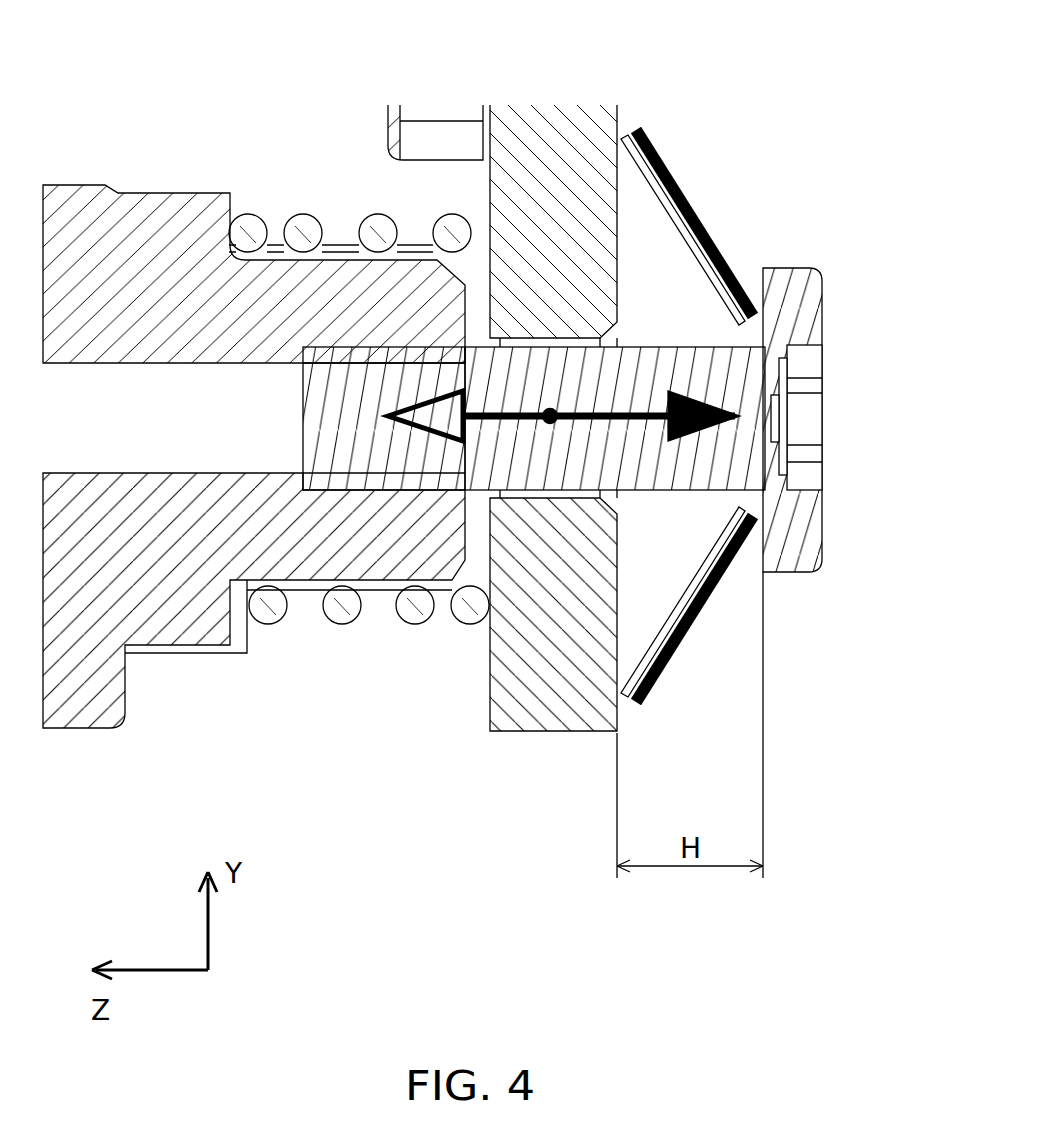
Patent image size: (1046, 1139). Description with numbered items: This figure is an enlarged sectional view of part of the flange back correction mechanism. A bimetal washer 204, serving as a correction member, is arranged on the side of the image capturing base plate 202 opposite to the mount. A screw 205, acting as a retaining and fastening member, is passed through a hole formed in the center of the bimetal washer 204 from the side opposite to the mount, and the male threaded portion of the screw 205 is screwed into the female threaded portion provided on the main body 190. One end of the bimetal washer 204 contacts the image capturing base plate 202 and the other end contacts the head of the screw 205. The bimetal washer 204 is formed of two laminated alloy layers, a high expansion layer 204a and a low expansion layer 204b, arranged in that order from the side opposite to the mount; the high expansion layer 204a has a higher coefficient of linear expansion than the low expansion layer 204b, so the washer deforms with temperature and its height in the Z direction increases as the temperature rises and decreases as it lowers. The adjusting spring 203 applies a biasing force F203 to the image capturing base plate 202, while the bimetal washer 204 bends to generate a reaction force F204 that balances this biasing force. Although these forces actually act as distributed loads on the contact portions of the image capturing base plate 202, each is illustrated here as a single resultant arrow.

The main body 190 is at (173, 617).
The image capturing base plate 202 is at (558, 133).
The adjusting spring 203 is at (342, 627).
The bimetal washer 204 is at (752, 373).
The high expansion layer 204a is at (665, 170).
The low expansion layer 204b is at (622, 134).
The screw 205 is at (820, 292).
The biasing force F203 is at (700, 427).
The reaction force F204 is at (447, 440).